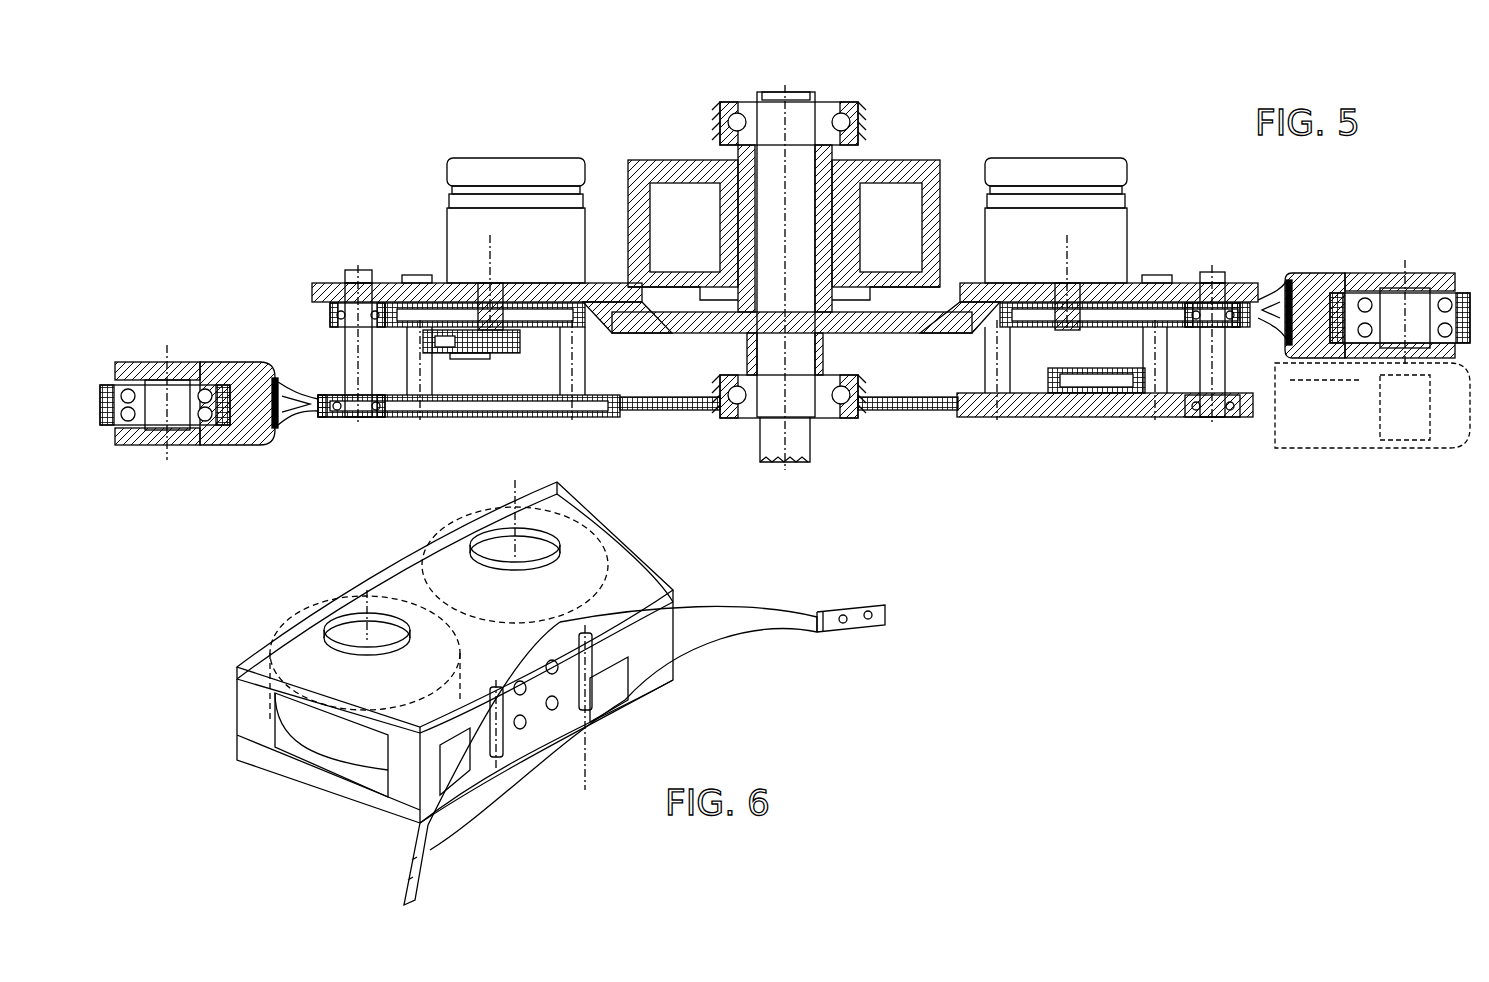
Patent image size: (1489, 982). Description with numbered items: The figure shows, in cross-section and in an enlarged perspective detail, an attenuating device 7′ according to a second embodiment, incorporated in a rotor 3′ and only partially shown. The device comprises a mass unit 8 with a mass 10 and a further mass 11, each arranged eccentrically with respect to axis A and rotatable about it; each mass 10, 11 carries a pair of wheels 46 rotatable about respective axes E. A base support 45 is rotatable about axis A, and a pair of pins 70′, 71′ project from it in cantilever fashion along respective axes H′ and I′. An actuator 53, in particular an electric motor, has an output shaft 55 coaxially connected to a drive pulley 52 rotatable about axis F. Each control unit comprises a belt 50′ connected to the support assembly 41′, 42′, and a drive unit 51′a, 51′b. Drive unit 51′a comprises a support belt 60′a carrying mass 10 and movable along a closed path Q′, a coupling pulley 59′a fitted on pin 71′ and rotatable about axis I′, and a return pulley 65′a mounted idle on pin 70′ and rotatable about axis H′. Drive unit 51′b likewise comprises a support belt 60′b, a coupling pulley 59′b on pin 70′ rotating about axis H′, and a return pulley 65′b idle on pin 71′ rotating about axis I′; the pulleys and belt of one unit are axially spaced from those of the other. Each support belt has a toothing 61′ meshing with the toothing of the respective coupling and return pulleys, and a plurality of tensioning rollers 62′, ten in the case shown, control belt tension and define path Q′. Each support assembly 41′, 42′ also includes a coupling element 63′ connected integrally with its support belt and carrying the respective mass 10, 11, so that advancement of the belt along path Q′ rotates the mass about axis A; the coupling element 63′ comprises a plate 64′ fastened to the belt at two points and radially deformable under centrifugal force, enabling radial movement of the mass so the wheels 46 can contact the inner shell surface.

In FIG. 5, the attenuating device 7′ is at (150, 140).
In FIG. 5, the support assembly 41′ is at (200, 260).
In FIG. 5, the mass unit 8 is at (275, 172).
In FIG. 5, the mass 10 is at (158, 300).
In FIG. 6, the mass 10 is at (255, 568).
In FIG. 5, the coupling element 63′ is at (250, 305).
In FIG. 6, the coupling element 63′ is at (358, 825).
In FIG. 5, the return pulley 65′a is at (330, 296).
In FIG. 5, the actuator 53 is at (482, 160).
In FIG. 5, the drive unit 51′a is at (523, 158).
In FIG. 5, the axis A is at (782, 140).
In FIG. 5, the rotor 3′ is at (1085, 130).
In FIG. 5, the support assembly 42′ is at (1408, 240).
In FIG. 5, the mass 11 is at (1425, 213).
In FIG. 5, the coupling pulley 59′a is at (1228, 262).
In FIG. 5, the tensioning rollers 62′ is at (1158, 272).
In FIG. 5, the base support 45 is at (1246, 285).
In FIG. 5, the plate 64′ is at (290, 413).
In FIG. 6, the plate 64′ is at (760, 620).
In FIG. 5, the axis E is at (168, 385).
In FIG. 6, the axis E is at (367, 590).
In FIG. 5, the wheels 46 is at (235, 440).
In FIG. 6, the wheels 46 is at (300, 722).
In FIG. 5, the axis F is at (490, 270).
In FIG. 5, the output shaft 55 is at (498, 300).
In FIG. 5, the closed path Q′ is at (1048, 312).
In FIG. 5, the axis H′ is at (345, 335).
In FIG. 5, the pin 70′ is at (356, 395).
In FIG. 5, the belt 50′ is at (455, 340).
In FIG. 5, the drive pulley 52 is at (495, 333).
In FIG. 5, the toothing 61′ is at (640, 400).
In FIG. 5, the coupling pulley 59′b is at (392, 420).
In FIG. 5, the support belt 60′b is at (897, 418).
In FIG. 5, the drive unit 51′b is at (1097, 430).
In FIG. 5, the pin 71′ is at (1192, 380).
In FIG. 5, the axis I′ is at (1212, 400).
In FIG. 5, the return pulley 65′b is at (1250, 420).
In FIG. 5, the support belt 60′a is at (1245, 330).